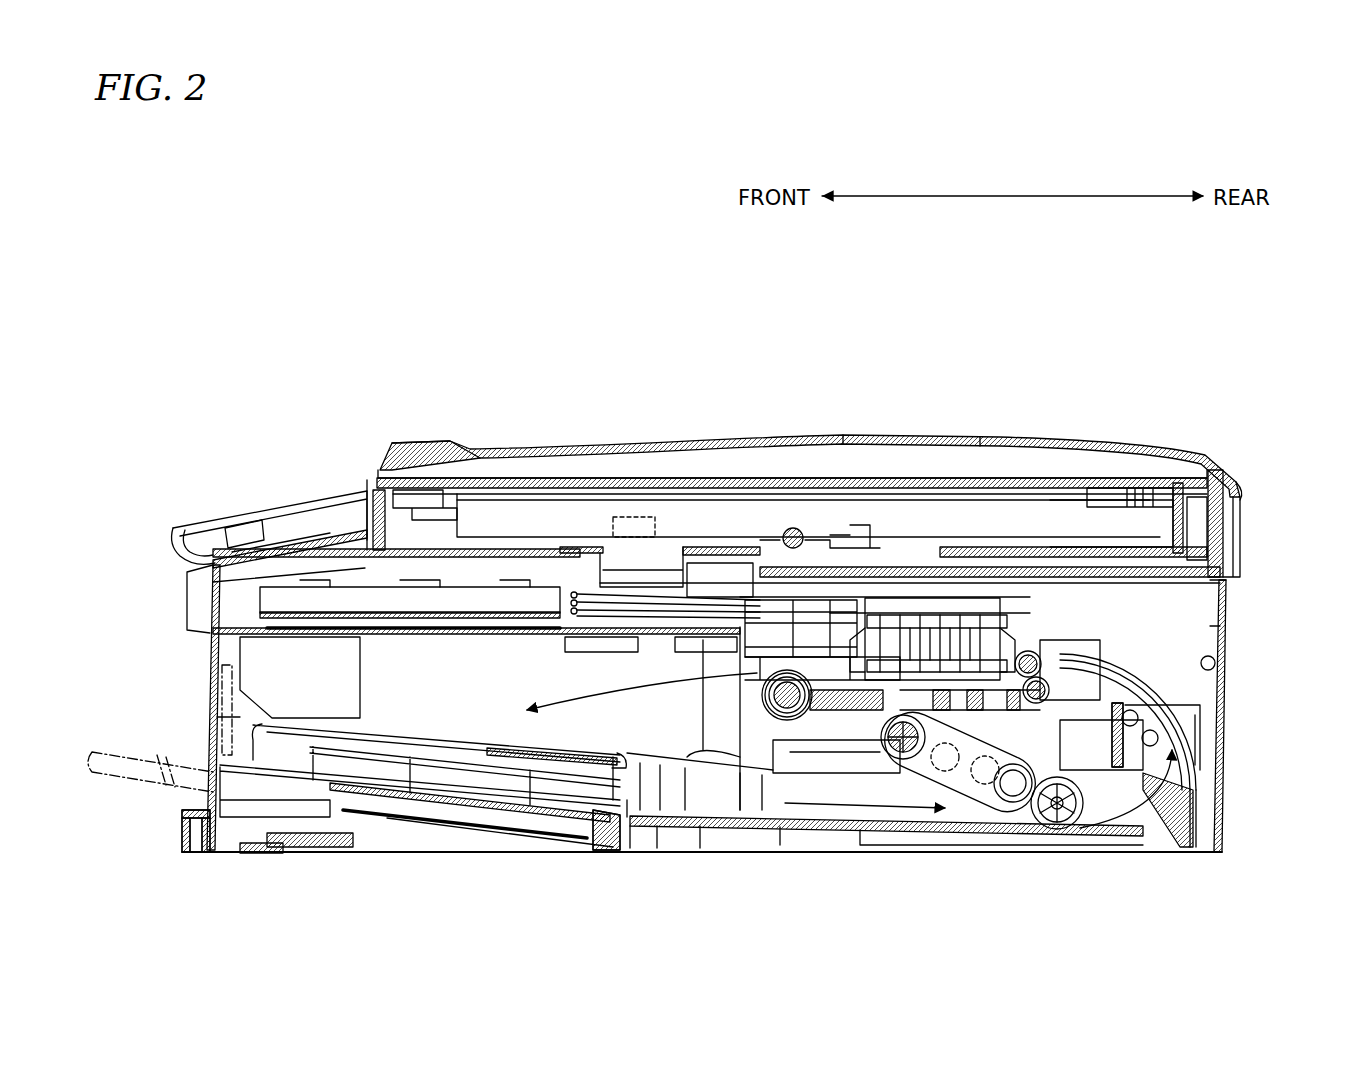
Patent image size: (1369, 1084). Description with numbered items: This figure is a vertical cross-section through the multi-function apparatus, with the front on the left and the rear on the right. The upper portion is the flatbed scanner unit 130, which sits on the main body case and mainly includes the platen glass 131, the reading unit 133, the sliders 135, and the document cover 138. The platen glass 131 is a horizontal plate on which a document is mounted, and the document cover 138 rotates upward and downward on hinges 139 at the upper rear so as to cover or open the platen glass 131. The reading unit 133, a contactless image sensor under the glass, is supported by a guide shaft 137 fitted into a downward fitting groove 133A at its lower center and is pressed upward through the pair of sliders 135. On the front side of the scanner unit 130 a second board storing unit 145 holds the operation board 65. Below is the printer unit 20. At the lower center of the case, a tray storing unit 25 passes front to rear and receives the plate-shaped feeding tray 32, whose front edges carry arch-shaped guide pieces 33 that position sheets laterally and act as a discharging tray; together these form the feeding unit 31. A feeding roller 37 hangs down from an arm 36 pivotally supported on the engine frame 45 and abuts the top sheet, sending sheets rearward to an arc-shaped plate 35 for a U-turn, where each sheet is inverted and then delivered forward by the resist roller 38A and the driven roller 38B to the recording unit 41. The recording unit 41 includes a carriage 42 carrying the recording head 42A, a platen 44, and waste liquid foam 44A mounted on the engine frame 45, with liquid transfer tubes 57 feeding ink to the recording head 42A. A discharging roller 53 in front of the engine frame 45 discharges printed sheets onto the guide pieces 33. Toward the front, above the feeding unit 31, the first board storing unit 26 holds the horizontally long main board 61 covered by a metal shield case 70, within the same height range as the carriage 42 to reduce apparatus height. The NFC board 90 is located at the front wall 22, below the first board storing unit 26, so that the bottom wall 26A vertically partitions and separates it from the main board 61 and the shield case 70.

The printer unit 20 is at (1230, 757).
The front wall 22 is at (212, 670).
The tray storing unit 25 is at (455, 673).
The first board storing unit 26 is at (243, 622).
The bottom wall 26A is at (310, 632).
The feeding unit 31 is at (427, 812).
The feeding tray 32 is at (537, 819).
The guide pieces 33 is at (373, 742).
The plate for a U-turn 35 is at (1185, 717).
The arm 36 is at (918, 752).
The feeding roller 37 is at (1062, 827).
The resist roller 38A is at (1030, 656).
The driven roller 38B is at (1042, 688).
The recording unit 41 is at (733, 624).
The carriage 42 is at (893, 600).
The recording head 42A is at (937, 640).
The platen 44 is at (948, 665).
The waste liquid foam 44A is at (822, 702).
The engine frame 45 is at (828, 776).
The discharging roller 53 is at (773, 697).
The liquid transfer tubes 57 is at (618, 604).
The main board 61 is at (503, 612).
The operation board 65 is at (287, 538).
The shield case 70 is at (360, 577).
The NFC board 90 is at (225, 712).
The scanner unit 130 is at (737, 428).
The platen glass 131 is at (622, 482).
The reading unit 133 is at (710, 520).
The fitting groove 133A is at (793, 528).
The sliders 135 is at (430, 498).
The guide shaft 137 is at (785, 528).
The document cover 138 is at (934, 437).
The hinges 139 is at (1238, 483).
The second board storing unit 145 is at (213, 557).